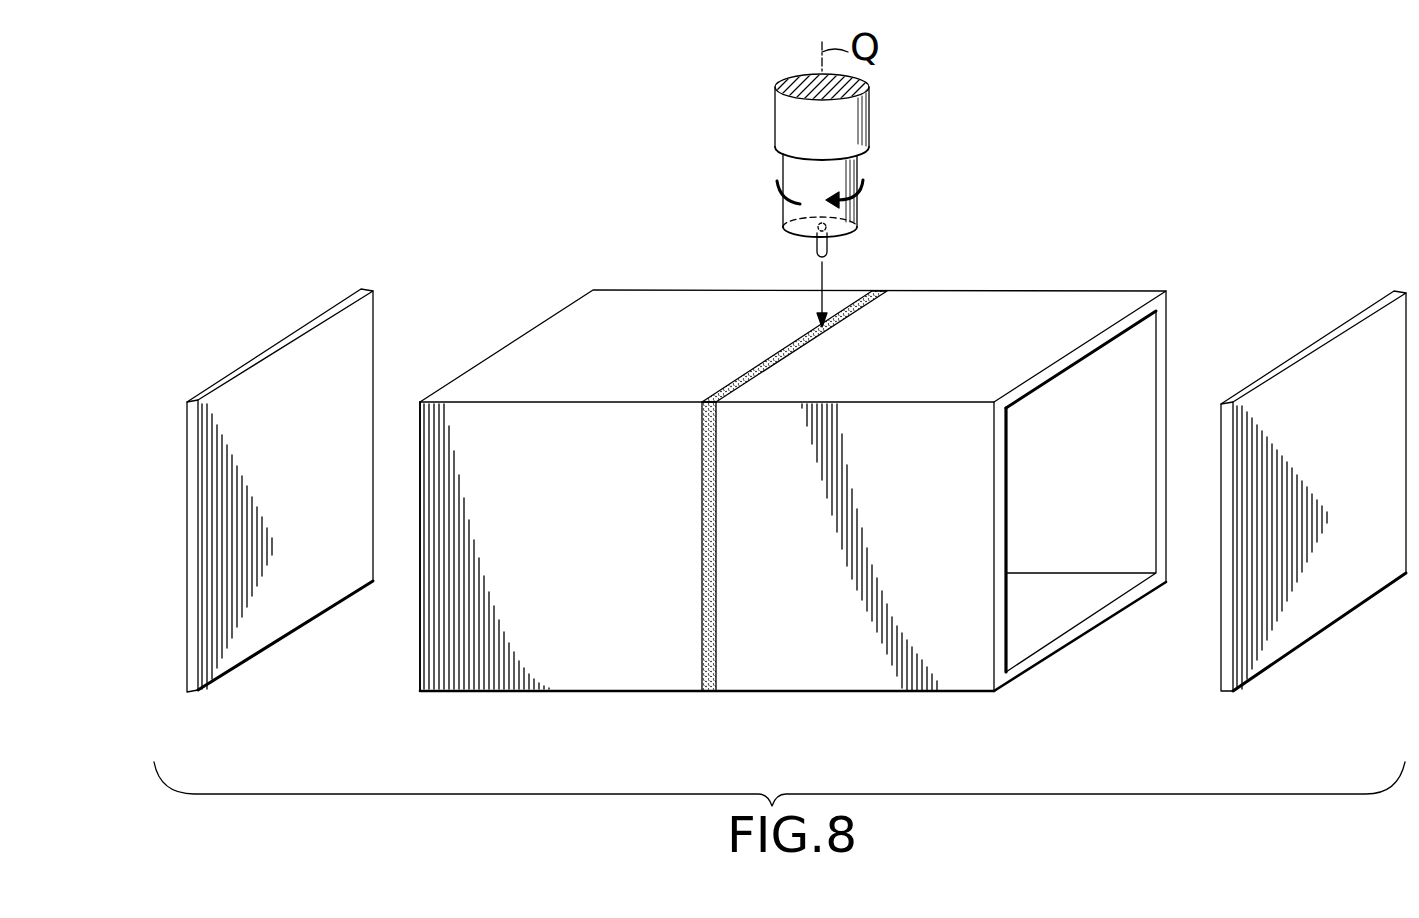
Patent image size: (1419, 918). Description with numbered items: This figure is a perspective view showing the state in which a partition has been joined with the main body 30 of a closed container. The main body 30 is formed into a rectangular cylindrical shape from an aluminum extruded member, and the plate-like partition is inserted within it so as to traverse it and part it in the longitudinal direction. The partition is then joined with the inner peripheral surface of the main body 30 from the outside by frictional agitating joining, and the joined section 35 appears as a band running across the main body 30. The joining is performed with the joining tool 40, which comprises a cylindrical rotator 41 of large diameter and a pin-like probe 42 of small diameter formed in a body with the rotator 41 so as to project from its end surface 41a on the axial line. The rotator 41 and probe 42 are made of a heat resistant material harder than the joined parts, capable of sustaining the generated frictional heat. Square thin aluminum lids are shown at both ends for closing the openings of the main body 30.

The main body 30 is at (808, 653).
The joined section 35 is at (703, 615).
The joining tool 40 is at (876, 82).
The rotator 41 is at (797, 172).
The end surface 41a is at (798, 238).
The probe 42 is at (827, 242).